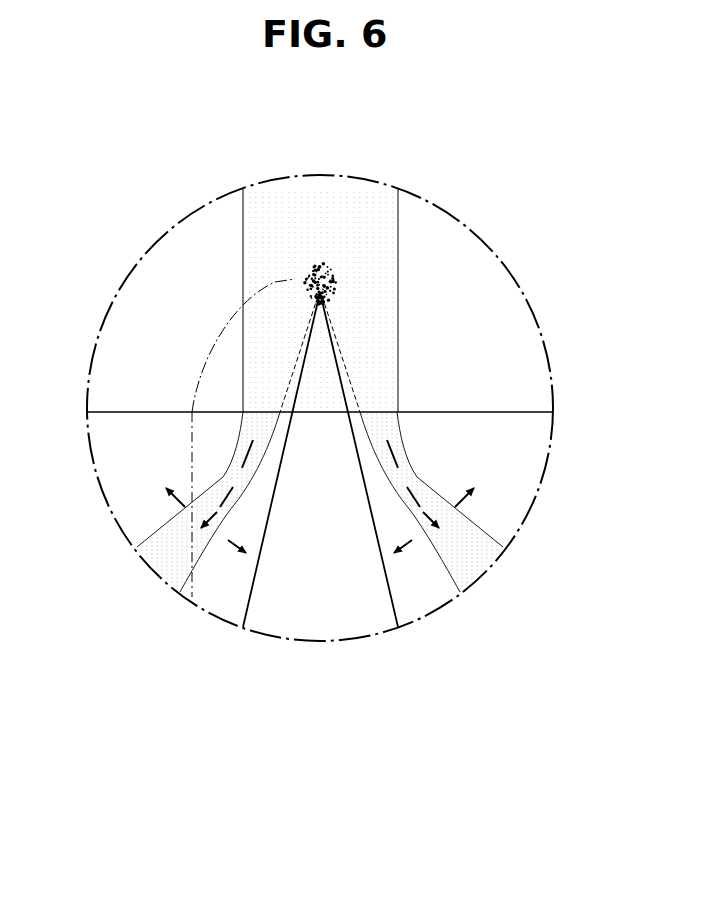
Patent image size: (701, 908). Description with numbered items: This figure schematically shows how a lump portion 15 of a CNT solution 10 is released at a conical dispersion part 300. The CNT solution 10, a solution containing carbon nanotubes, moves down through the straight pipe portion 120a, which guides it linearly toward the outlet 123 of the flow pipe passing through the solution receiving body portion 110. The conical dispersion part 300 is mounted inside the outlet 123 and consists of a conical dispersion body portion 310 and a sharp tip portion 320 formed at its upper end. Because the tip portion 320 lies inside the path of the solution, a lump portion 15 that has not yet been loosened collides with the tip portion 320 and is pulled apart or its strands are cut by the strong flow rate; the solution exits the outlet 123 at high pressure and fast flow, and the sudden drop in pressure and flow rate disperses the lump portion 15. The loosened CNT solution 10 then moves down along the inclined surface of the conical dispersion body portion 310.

The CNT solution 10 is at (266, 250).
The lump portion 15 is at (313, 268).
The solution receiving body portion 110 is at (140, 325).
The straight pipe portion 120a is at (398, 247).
The outlet 123 is at (357, 410).
The conical dispersion part 300 is at (272, 718).
The conical dispersion body portion 310 is at (295, 613).
The tip portion 320 is at (190, 590).